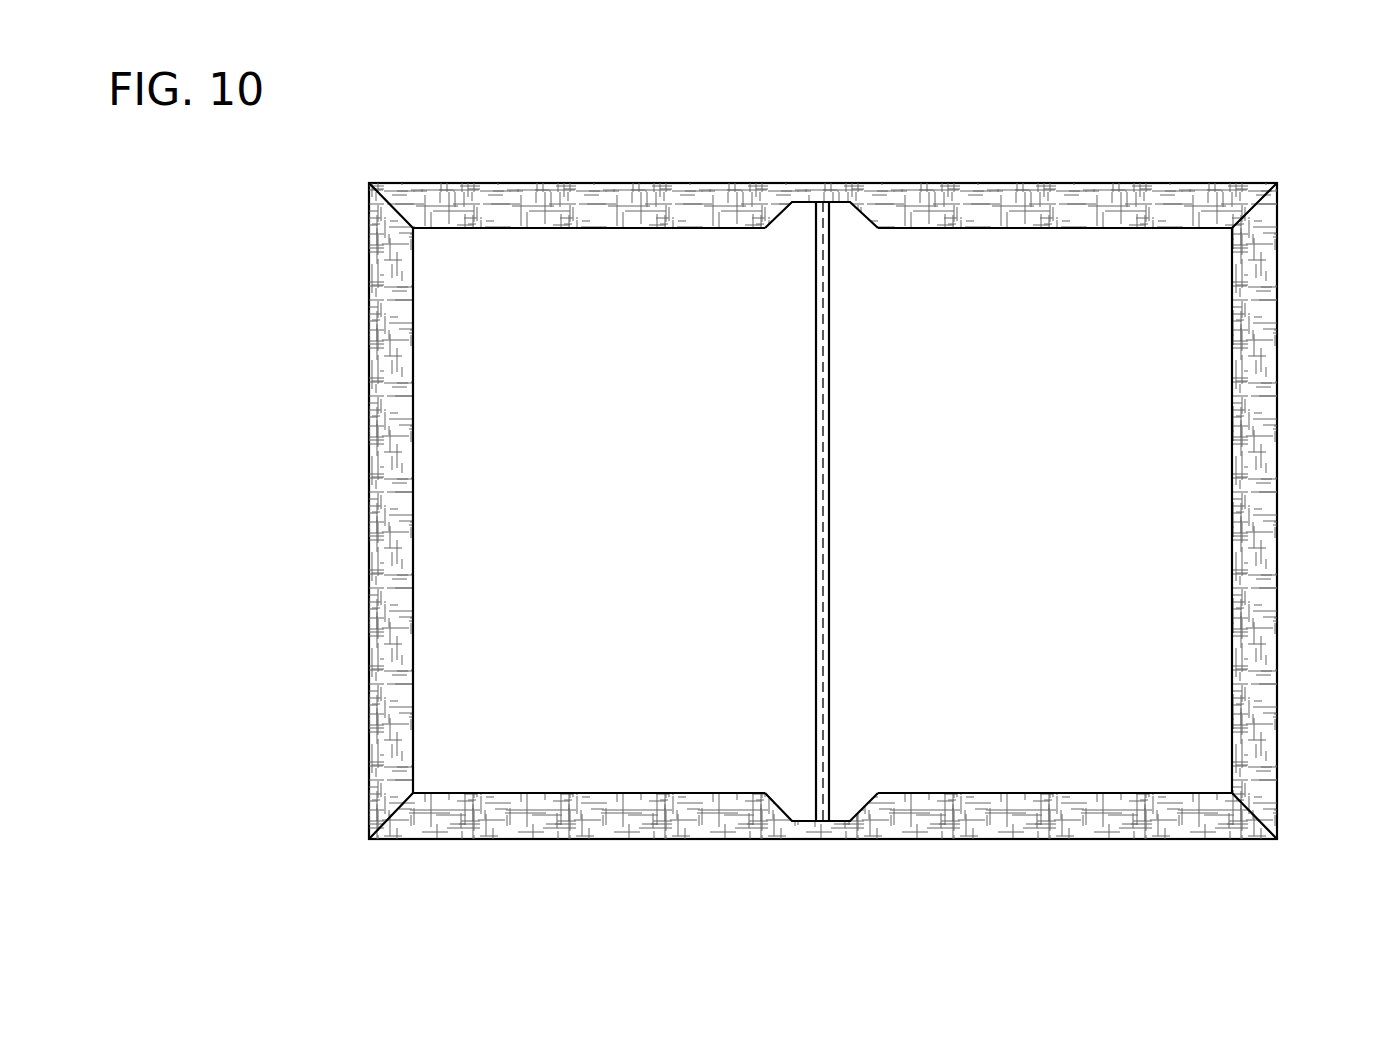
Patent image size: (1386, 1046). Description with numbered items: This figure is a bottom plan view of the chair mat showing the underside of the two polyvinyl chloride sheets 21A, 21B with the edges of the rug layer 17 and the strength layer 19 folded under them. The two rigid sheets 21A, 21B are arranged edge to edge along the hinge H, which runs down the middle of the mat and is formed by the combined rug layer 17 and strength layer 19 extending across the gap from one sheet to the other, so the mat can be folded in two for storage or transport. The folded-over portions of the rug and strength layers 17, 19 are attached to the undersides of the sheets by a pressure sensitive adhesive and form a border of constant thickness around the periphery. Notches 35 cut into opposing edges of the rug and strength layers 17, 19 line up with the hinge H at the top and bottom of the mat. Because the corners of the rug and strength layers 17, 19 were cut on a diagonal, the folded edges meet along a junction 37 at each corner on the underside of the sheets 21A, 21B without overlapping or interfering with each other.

The rug layer 17 is at (1008, 182).
The strength layer 19 is at (823, 511).
The polyvinyl chloride sheet 21A is at (633, 755).
The polyvinyl chloride sheet 21B is at (1067, 753).
The notches 35 is at (866, 216).
The junction 37 is at (395, 209).
The hinge H is at (825, 400).